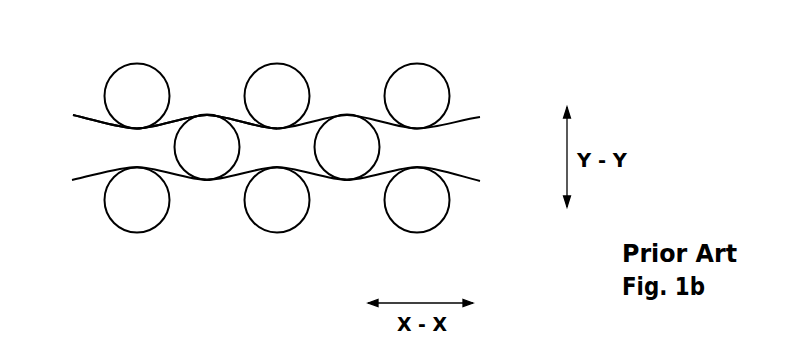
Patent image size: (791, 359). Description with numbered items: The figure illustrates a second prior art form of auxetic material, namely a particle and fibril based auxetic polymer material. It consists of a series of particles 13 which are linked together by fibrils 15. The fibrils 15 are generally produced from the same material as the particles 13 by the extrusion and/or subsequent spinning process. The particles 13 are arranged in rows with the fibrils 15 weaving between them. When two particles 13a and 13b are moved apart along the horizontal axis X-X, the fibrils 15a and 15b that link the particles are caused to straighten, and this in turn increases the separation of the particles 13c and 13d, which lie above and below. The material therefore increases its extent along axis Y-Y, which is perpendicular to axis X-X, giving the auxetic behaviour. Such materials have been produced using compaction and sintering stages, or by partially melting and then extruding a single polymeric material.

The particles 13 is at (127, 90).
The particle 13a is at (207, 153).
The particle 13b is at (348, 148).
The particle 13c is at (282, 90).
The particle 13d is at (280, 203).
The fibrils 15 is at (173, 120).
The fibril 15a is at (245, 120).
The fibril 15b is at (312, 117).